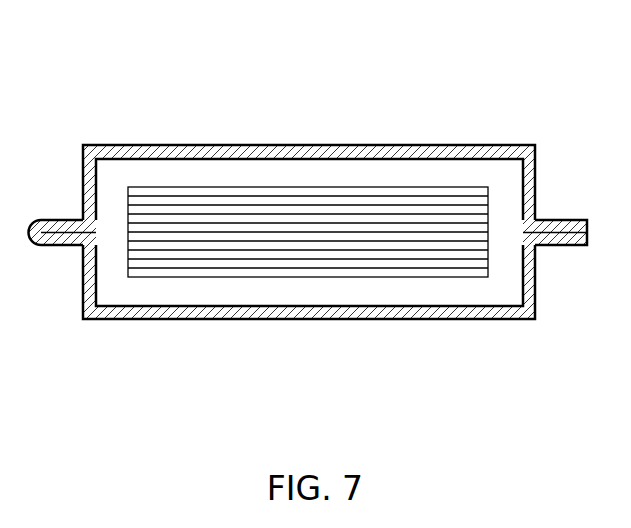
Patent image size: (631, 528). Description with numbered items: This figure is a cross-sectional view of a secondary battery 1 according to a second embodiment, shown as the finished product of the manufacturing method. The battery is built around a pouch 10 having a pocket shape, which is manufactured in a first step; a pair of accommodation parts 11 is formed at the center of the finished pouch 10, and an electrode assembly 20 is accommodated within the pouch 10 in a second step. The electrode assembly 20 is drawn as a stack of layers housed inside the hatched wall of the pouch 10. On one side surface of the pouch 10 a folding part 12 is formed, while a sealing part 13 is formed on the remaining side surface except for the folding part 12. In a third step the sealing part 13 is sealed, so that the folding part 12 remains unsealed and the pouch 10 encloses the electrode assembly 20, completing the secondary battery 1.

The secondary battery 1 is at (475, 64).
The pouch 10 is at (469, 128).
The accommodation parts 11 is at (358, 313).
The folding part 12 is at (50, 228).
The sealing part 13 is at (578, 227).
The electrode assembly 20 is at (396, 166).